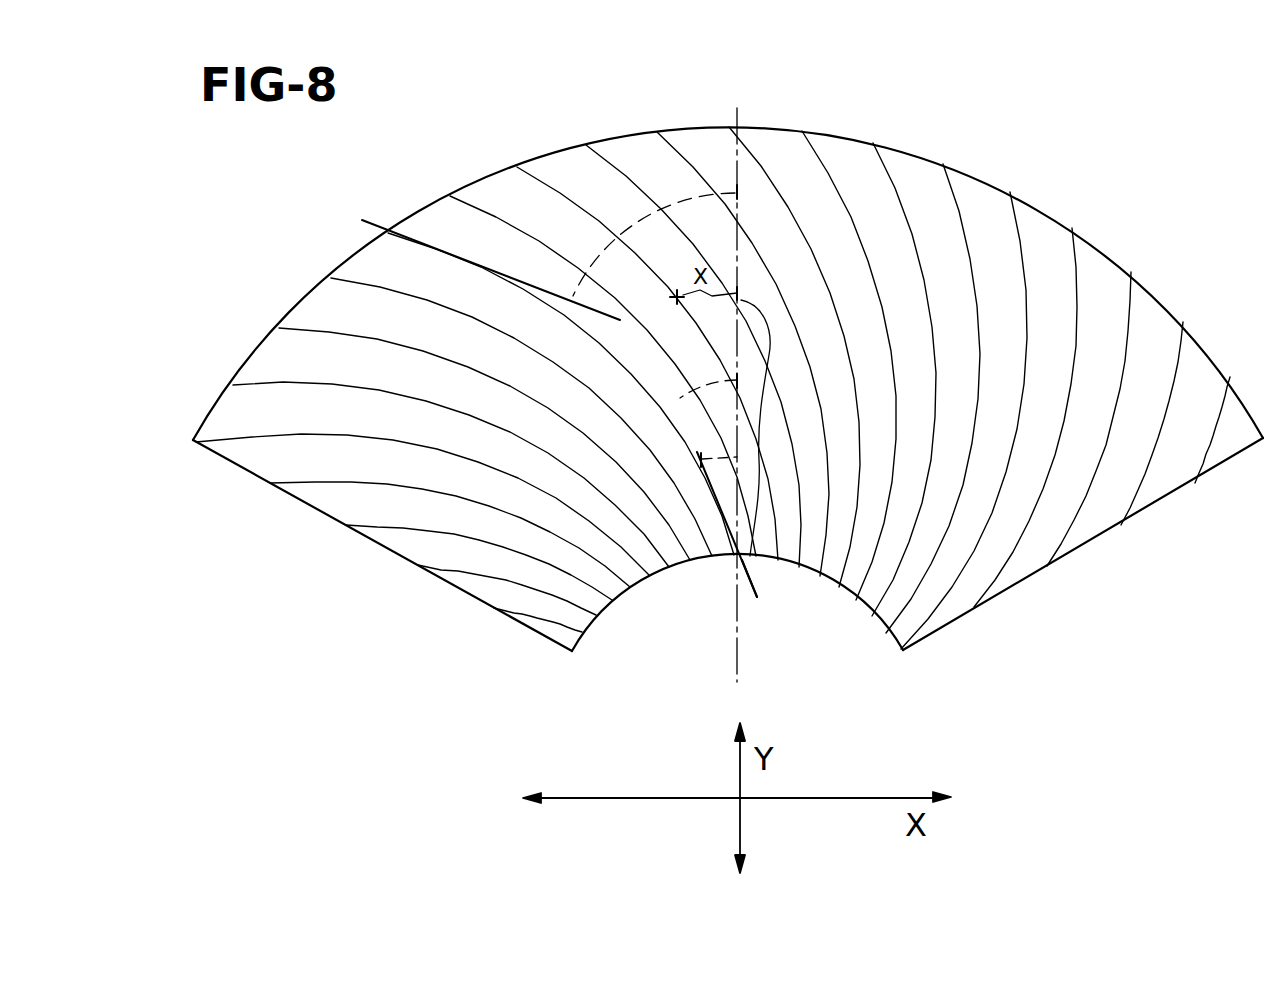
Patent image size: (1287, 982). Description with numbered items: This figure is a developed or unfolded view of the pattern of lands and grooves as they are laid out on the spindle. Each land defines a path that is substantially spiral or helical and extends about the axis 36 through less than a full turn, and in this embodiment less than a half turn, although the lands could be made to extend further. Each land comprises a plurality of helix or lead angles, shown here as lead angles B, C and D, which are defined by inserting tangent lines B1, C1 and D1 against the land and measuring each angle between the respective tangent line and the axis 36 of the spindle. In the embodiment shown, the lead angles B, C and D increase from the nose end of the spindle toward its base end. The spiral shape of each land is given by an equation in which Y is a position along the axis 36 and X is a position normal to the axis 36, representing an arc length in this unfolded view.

The axis 36 is at (739, 673).
The lead angle B is at (728, 420).
The tangent line B1 is at (757, 597).
The lead angle C is at (714, 332).
The tangent line C1 is at (697, 440).
The lead angle D is at (600, 158).
The tangent line D1 is at (526, 290).